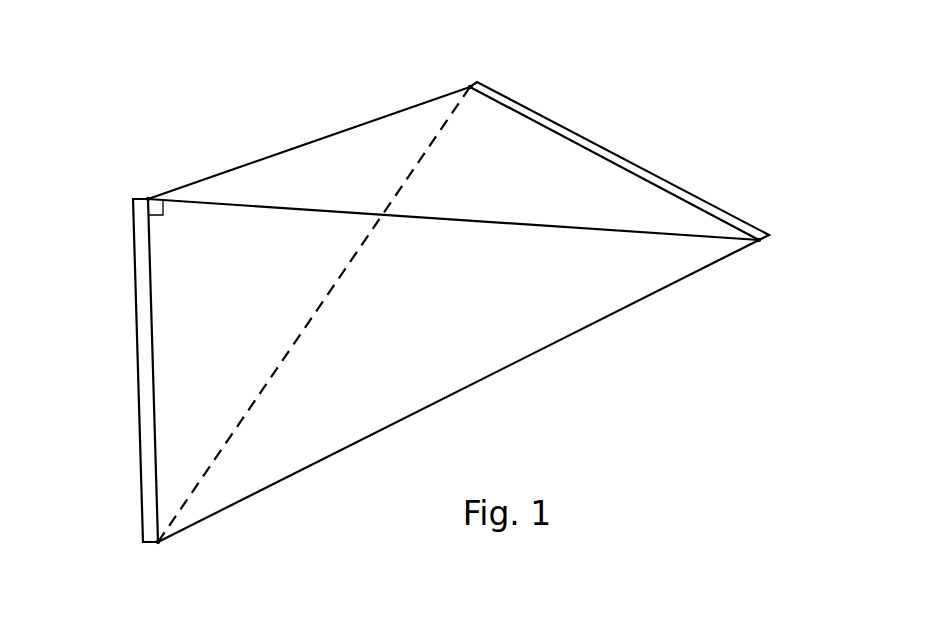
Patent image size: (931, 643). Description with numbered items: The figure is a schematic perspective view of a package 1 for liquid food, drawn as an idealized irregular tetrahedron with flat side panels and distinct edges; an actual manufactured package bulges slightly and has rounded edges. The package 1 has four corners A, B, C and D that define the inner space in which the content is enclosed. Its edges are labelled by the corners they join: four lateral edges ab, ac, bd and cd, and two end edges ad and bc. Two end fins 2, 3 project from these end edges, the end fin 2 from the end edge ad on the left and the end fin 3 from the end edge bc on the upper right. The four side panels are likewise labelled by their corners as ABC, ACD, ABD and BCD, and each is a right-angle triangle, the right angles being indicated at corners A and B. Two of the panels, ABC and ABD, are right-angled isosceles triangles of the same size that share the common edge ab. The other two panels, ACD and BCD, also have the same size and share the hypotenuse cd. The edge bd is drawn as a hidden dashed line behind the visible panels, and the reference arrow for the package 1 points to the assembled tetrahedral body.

The package 1 is at (244, 126).
The end fin 2 is at (140, 277).
The end fin 3 is at (668, 182).
The corner A is at (148, 199).
The corner B is at (470, 87).
The corner C is at (762, 240).
The corner D is at (157, 545).
The lateral edge ab is at (300, 143).
The lateral edge ac is at (478, 222).
The end edge ad is at (150, 368).
The end edge bc is at (618, 158).
The lateral edge bd is at (327, 295).
The lateral edge cd is at (508, 365).
The side panel ABD is at (372, 146).
The side panel ABC is at (518, 148).
The side panel ACD is at (597, 295).
The side panel BCD is at (390, 370).